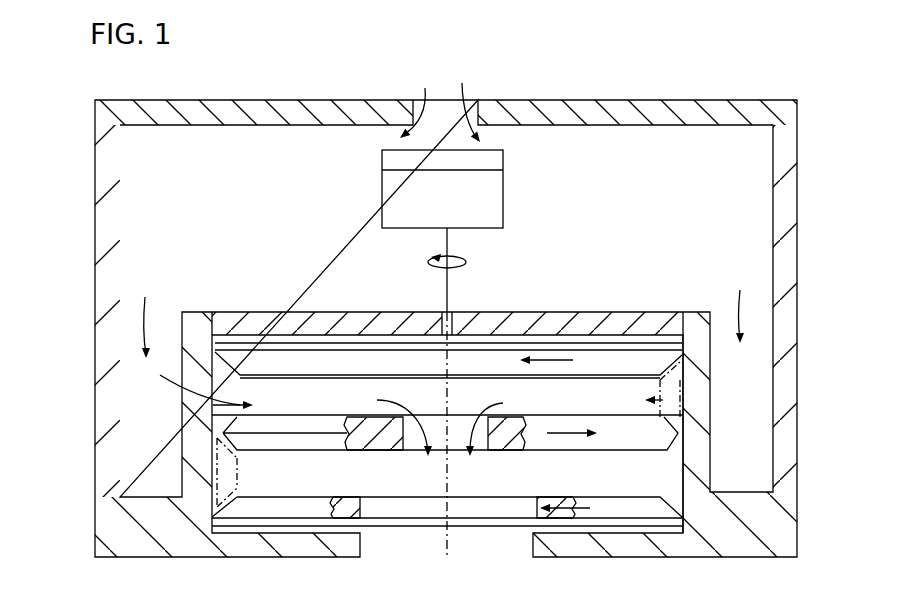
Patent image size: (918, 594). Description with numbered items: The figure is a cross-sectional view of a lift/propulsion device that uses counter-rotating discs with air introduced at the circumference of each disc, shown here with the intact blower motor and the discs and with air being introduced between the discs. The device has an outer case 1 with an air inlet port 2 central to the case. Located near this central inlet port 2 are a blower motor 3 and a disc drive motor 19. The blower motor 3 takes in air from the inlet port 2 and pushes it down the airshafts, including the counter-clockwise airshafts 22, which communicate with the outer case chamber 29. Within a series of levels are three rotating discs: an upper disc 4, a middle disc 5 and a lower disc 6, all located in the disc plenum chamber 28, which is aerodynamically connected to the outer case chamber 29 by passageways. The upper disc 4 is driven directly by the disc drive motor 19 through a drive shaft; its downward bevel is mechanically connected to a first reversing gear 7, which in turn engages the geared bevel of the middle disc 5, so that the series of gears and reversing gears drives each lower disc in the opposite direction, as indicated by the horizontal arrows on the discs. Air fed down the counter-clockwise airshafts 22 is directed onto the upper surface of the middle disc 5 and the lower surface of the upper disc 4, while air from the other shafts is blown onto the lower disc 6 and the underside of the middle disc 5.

The outer case 1 is at (110, 156).
The air inlet port 2 is at (433, 75).
The blower motor 3 is at (398, 162).
The disc drive motor 19 is at (482, 197).
The outer case chamber 29 is at (690, 168).
The upper disc 4 is at (255, 365).
The counter-clockwise airshafts 22 is at (140, 380).
The middle disc 5 is at (258, 432).
The lower disc 6 is at (248, 510).
The first reversing gear 7 is at (672, 413).
The disc plenum chamber 28 is at (628, 395).